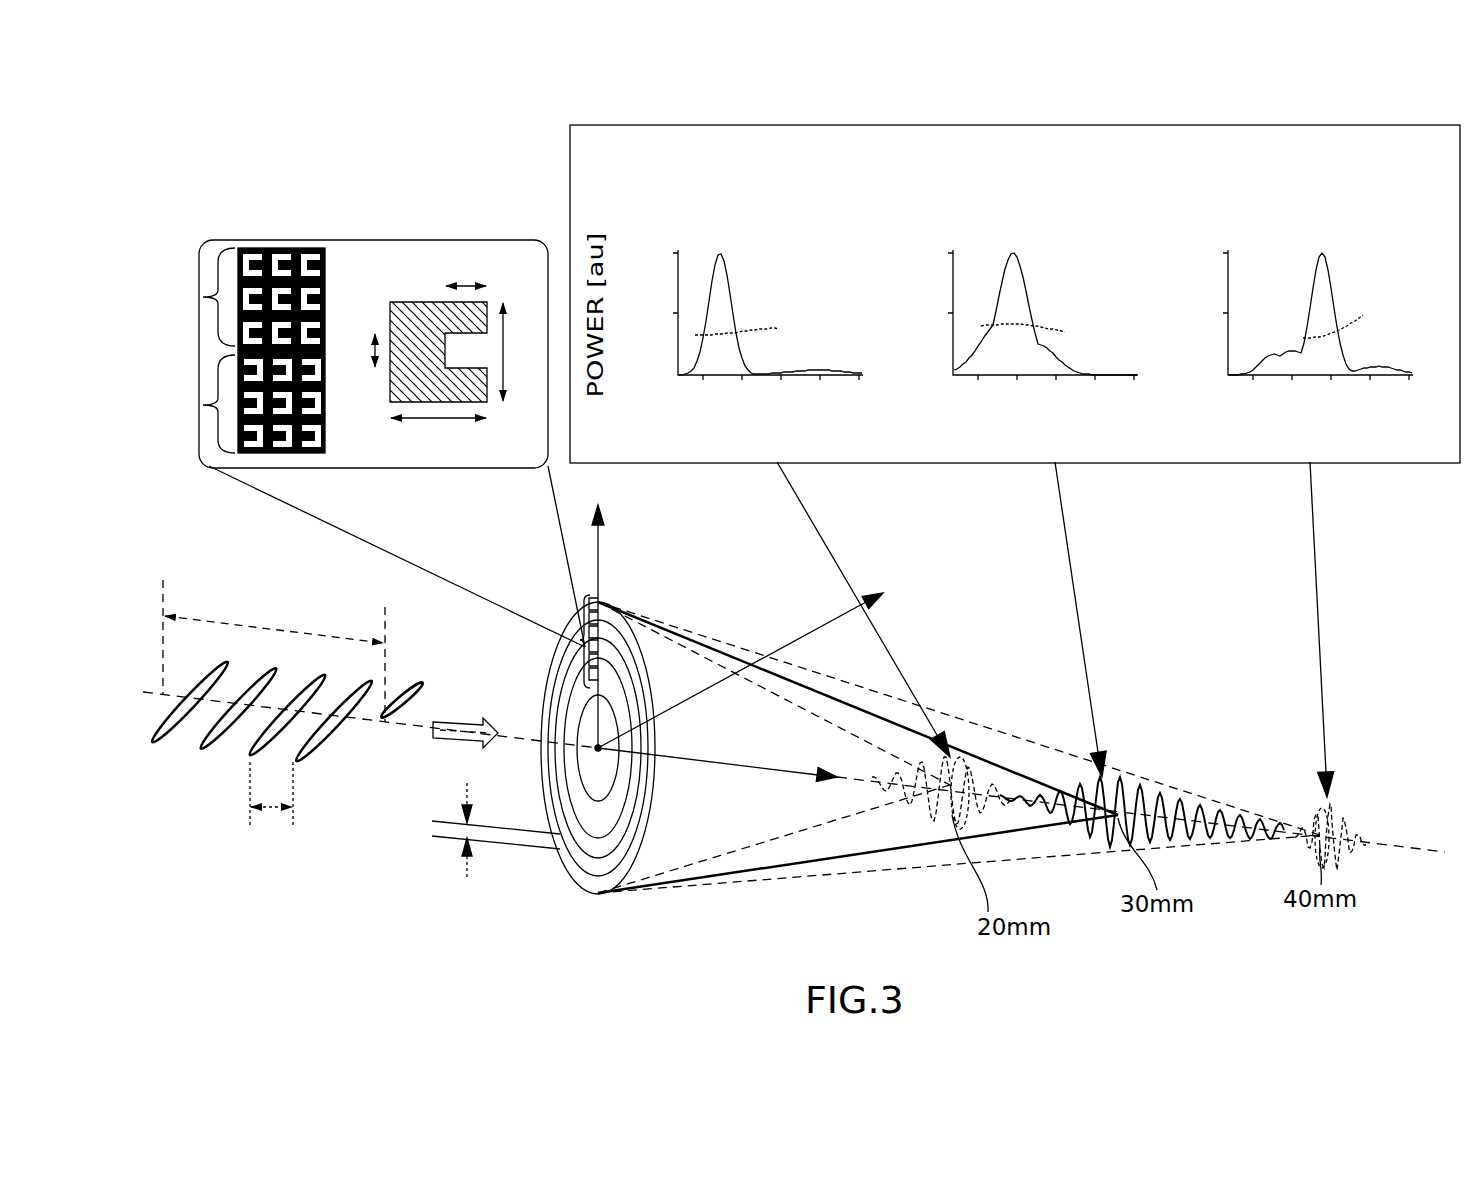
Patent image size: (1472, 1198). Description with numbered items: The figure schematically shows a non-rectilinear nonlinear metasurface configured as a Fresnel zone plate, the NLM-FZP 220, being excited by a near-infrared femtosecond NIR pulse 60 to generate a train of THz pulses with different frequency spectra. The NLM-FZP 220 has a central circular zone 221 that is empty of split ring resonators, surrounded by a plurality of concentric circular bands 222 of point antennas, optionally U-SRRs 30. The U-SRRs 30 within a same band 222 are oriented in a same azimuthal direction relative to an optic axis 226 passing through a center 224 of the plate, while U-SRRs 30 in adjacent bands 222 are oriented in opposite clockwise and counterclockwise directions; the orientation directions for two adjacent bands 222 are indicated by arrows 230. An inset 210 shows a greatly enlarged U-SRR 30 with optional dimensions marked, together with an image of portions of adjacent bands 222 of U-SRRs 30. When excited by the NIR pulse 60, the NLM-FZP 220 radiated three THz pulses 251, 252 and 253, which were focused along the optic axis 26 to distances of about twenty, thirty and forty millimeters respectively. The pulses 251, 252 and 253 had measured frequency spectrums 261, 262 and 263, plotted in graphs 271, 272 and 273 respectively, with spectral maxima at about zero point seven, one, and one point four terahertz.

The optic axis 26 is at (198, 297).
The U-SRR 30 is at (298, 250).
The NIR pulse 60 is at (218, 655).
The inset 210 is at (393, 238).
The NLM-FZP 220 is at (657, 708).
The central circular zone 221 is at (596, 749).
The concentric circular bands 222 is at (572, 868).
The center of the NLM-FZP 224 is at (612, 786).
The optic axis 226 is at (515, 736).
The arrows 230 is at (642, 672).
The THz pulse 251 is at (986, 760).
The THz pulse 252 is at (1137, 781).
The THz pulse 253 is at (1348, 799).
The frequency spectrum 261 is at (779, 329).
The frequency spectrum 262 is at (1065, 332).
The frequency spectrum 263 is at (1363, 315).
The graph 271 is at (758, 292).
The graph 272 is at (1031, 292).
The graph 273 is at (1306, 292).